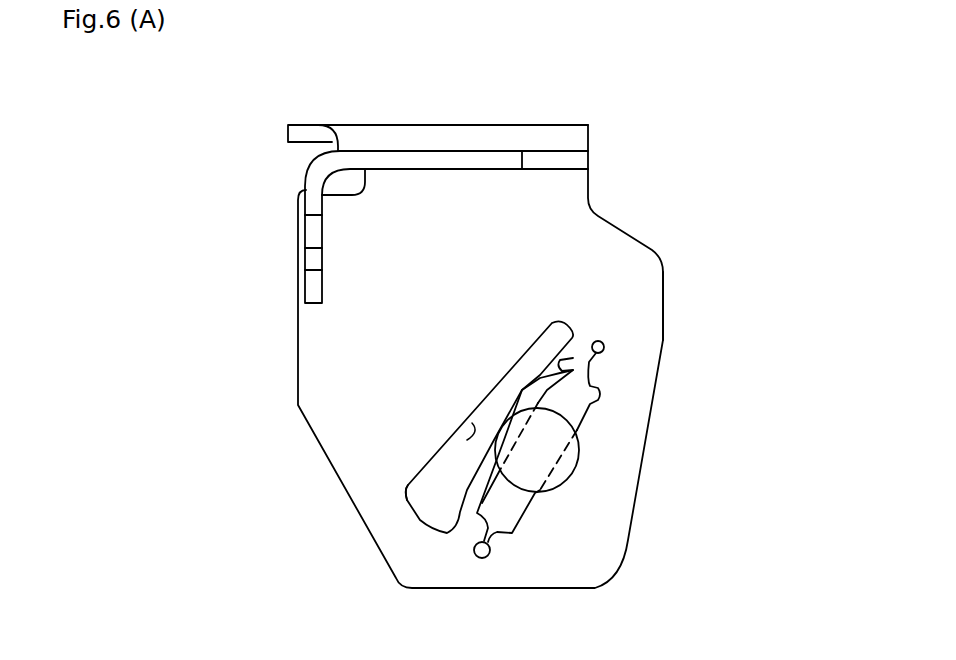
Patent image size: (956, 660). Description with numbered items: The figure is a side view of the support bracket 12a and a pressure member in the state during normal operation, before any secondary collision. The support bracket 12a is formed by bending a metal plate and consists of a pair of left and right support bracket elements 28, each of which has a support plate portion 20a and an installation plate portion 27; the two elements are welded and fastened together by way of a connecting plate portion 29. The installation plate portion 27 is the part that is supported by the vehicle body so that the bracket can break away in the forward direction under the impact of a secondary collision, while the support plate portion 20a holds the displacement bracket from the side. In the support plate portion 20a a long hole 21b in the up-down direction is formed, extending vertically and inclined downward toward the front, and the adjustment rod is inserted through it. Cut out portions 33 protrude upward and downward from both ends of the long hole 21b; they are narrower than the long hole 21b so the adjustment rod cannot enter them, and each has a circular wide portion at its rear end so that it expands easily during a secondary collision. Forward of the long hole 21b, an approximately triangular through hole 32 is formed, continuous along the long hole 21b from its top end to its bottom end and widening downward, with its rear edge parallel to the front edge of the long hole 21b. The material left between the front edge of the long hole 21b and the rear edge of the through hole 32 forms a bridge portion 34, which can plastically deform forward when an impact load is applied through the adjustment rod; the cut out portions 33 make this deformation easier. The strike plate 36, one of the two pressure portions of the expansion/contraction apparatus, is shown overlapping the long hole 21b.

The support bracket 12a is at (625, 232).
The connecting plate portion 29 is at (378, 140).
The installation plate portion 27 is at (562, 163).
The support bracket element 28 is at (378, 283).
The support plate portion 20a is at (623, 287).
The through hole 32 is at (467, 440).
The bridge portion 34 is at (490, 470).
The long hole in the up-down direction 21b is at (585, 398).
The cut out portion 33 is at (604, 347).
The strike plate 36 is at (563, 465).